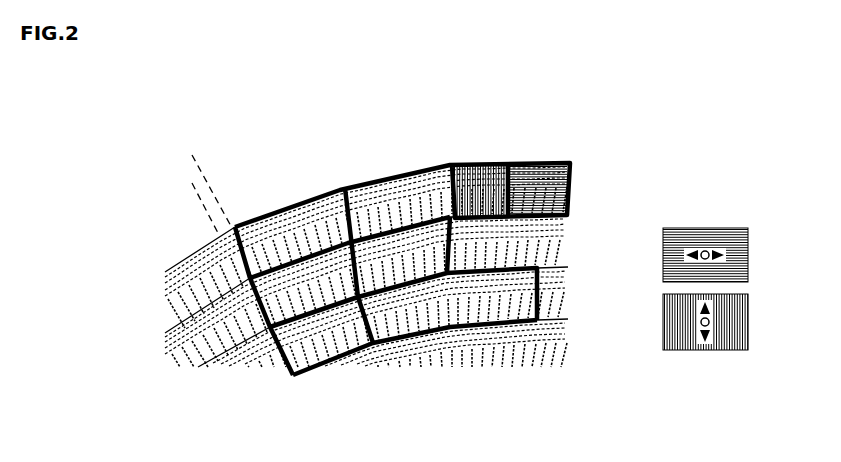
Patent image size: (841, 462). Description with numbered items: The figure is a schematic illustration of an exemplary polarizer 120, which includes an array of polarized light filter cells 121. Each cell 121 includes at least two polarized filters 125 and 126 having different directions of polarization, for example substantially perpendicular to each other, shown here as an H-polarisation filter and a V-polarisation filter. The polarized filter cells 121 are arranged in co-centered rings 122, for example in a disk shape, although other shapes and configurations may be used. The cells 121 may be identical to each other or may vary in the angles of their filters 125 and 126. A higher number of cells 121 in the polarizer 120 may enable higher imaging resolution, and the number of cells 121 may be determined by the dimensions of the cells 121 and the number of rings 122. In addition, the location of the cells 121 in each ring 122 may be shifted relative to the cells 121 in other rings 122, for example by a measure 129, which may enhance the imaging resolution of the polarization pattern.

The polarizer 120 is at (600, 82).
The polarized light filter cell 121 is at (296, 218).
The co-centered ring 122 is at (180, 298).
The polarized filter 125 is at (548, 195).
The polarized filter 126 is at (487, 193).
The measure 129 is at (240, 175).